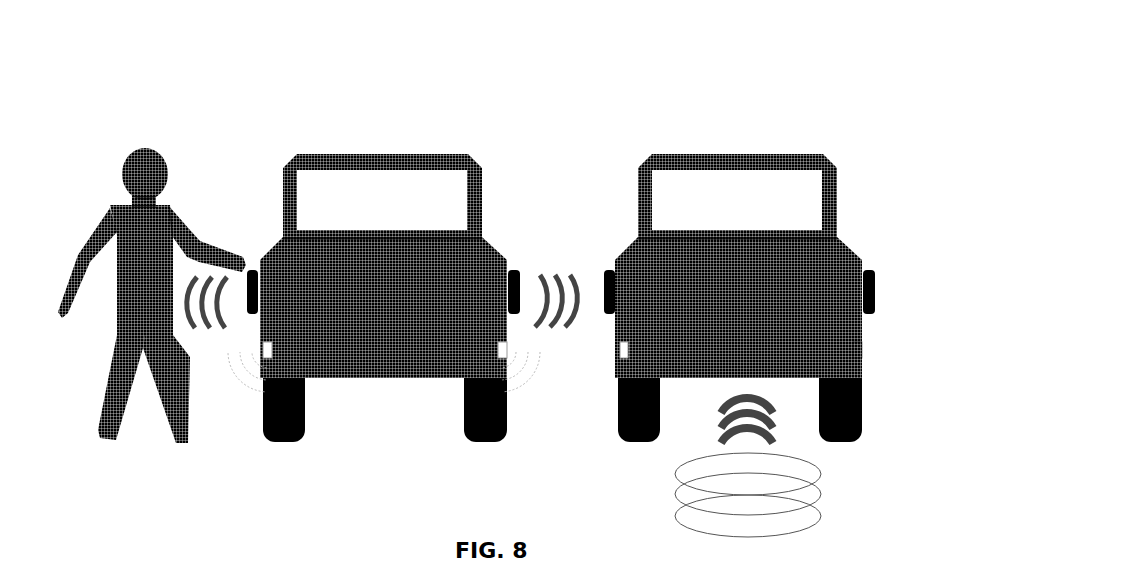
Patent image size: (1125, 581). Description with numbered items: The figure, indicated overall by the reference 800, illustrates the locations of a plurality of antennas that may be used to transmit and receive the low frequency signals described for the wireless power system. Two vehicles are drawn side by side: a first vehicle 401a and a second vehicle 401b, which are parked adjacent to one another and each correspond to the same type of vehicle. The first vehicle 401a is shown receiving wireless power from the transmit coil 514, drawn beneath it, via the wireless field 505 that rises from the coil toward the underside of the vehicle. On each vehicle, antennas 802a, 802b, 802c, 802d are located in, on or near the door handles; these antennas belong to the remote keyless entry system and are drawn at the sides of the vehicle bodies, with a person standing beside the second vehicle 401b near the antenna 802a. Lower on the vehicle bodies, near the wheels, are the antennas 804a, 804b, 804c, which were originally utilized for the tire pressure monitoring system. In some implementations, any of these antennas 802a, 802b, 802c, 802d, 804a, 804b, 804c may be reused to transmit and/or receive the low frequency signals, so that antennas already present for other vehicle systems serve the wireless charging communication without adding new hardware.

The vehicle communication scenario 800 is at (183, 66).
The first vehicle 401a is at (650, 156).
The second vehicle 401b is at (387, 158).
The antenna 802a is at (250, 272).
The antenna 802b is at (513, 269).
The antenna 802c is at (612, 268).
The antenna 802d is at (868, 268).
The antenna 804a is at (268, 358).
The antenna 804b is at (502, 360).
The antenna 804c is at (624, 360).
The wireless field 505 is at (743, 414).
The transmit coil 514 is at (678, 493).